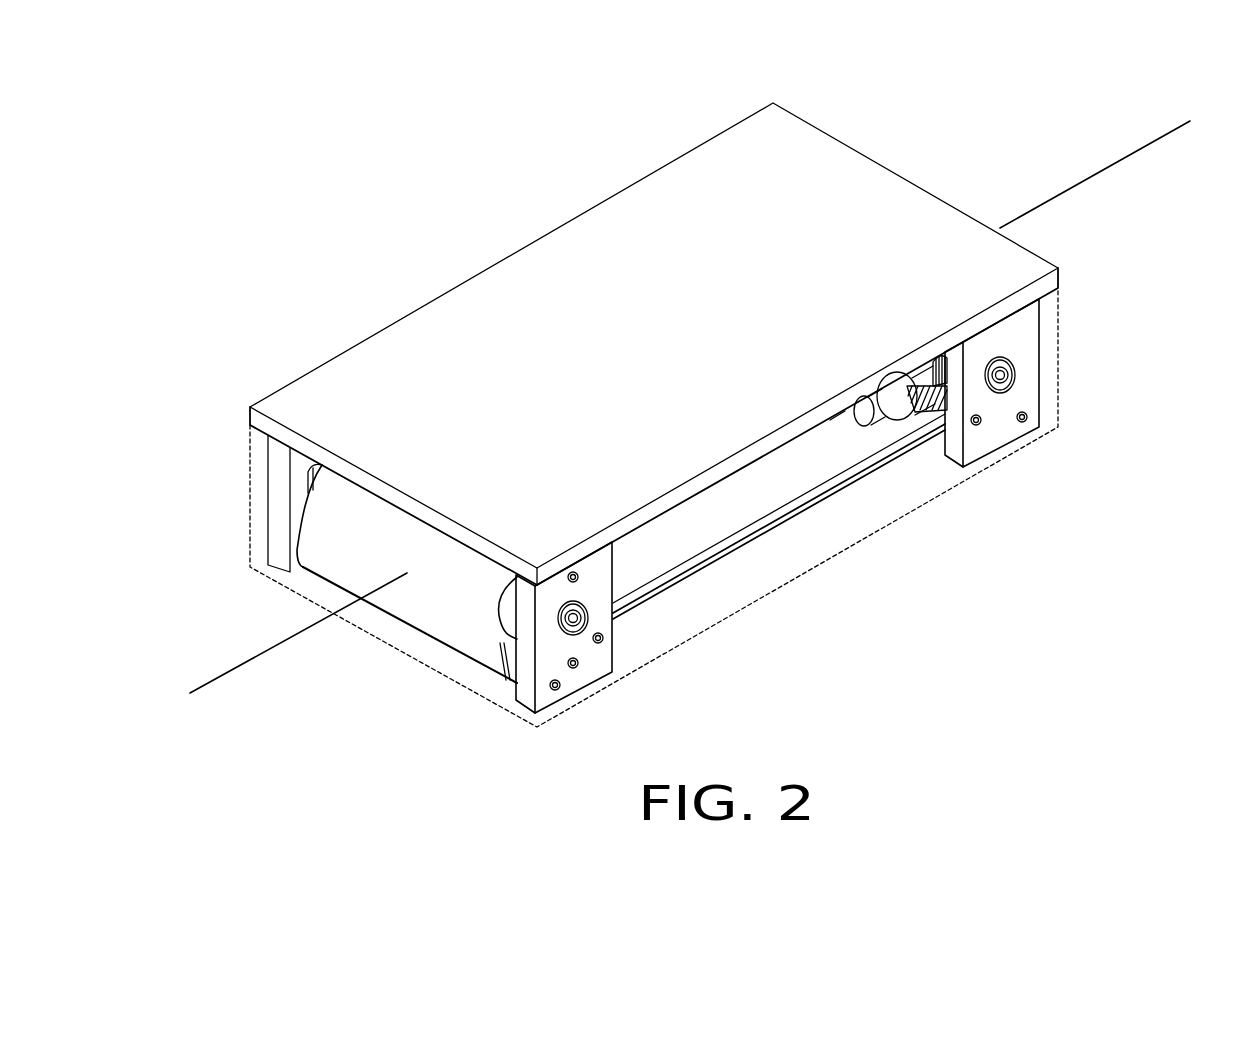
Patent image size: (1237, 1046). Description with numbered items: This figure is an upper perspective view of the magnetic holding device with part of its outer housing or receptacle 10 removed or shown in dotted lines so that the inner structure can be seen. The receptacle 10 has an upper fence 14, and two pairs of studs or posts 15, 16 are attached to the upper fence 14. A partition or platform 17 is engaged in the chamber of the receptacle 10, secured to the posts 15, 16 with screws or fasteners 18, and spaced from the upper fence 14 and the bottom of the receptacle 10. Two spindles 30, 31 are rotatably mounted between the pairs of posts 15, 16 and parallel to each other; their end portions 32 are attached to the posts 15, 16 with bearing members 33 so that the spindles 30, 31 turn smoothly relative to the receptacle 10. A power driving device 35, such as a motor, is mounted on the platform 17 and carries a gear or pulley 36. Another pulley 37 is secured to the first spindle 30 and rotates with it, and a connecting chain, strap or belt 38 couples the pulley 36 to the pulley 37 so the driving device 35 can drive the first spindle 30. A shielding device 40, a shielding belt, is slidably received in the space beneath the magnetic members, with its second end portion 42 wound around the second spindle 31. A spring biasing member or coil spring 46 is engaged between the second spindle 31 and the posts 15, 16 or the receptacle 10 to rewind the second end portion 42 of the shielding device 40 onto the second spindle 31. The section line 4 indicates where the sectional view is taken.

The section line 4- 4 is at (240, 678).
The receptacle 10 is at (827, 560).
The upper fence 14 is at (542, 273).
The post 15 is at (557, 697).
The post 16 is at (1022, 327).
The platform 17 is at (817, 465).
The fasteners 18 is at (980, 424).
The first spindle 30 is at (1013, 373).
The second spindle 31 is at (573, 620).
The end portion 32 is at (577, 623).
The bearing member 33 is at (1015, 353).
The power driving device 35 is at (845, 417).
The pulley 36 is at (892, 408).
The pulley 37 is at (941, 357).
The belt 38 is at (918, 408).
The shielding device 40 is at (740, 547).
The second end portion 42 is at (438, 540).
The coil spring 46 is at (505, 620).